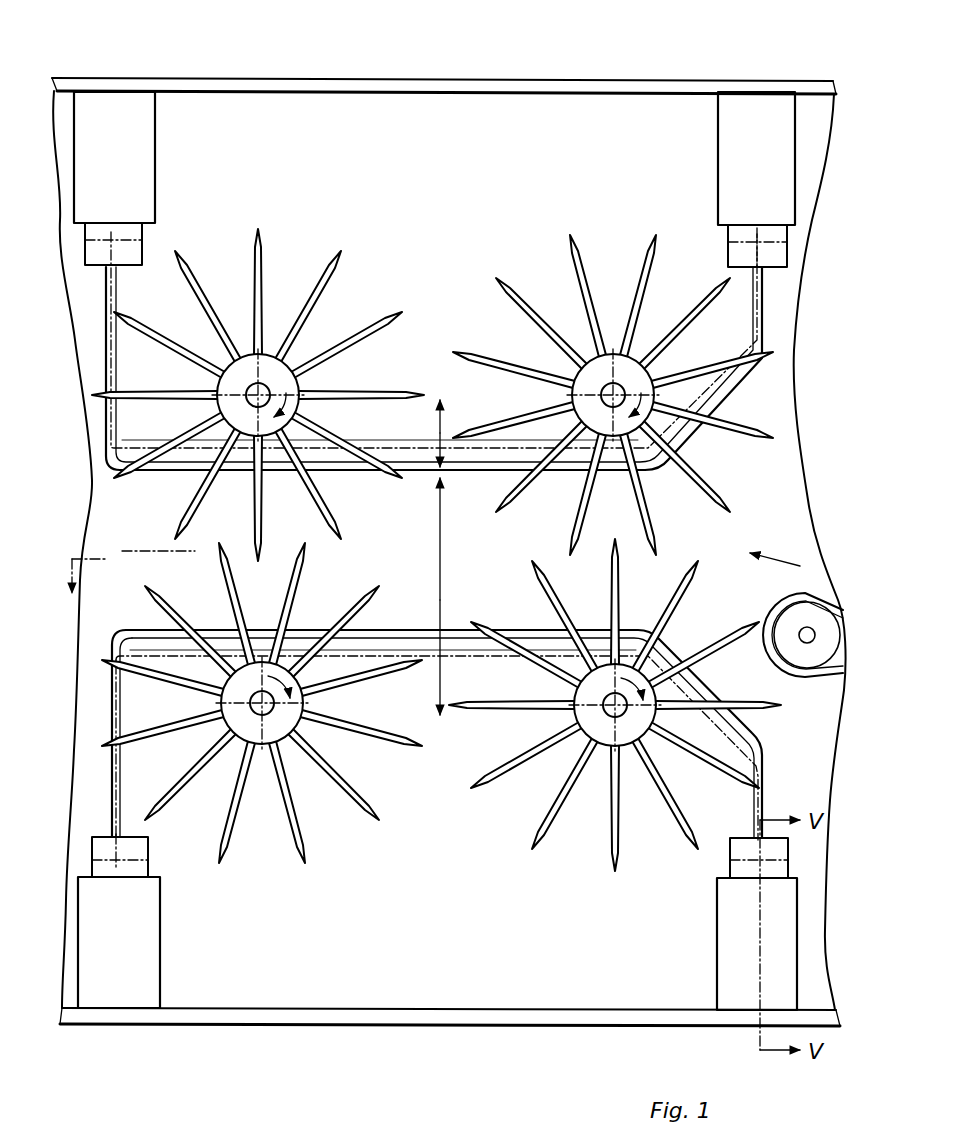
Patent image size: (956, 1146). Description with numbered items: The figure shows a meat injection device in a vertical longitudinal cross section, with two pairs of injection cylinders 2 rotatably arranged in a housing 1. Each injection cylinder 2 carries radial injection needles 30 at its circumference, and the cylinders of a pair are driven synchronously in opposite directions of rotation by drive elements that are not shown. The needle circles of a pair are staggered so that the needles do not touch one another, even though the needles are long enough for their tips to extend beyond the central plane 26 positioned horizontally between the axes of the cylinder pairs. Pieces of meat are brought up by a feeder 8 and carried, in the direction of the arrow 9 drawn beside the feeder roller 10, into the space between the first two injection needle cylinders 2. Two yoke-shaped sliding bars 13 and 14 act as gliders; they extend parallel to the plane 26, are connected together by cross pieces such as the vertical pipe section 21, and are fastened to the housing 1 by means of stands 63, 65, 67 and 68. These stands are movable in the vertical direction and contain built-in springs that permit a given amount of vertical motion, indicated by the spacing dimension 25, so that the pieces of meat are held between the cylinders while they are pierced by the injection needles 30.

The housing 1 is at (78, 200).
The injection cylinder 2 is at (628, 368).
The feeder 8 is at (830, 597).
The direction of movement arrow 9 is at (777, 556).
The guide roller 10 is at (816, 597).
The sliding bar 13 is at (737, 382).
The sliding bar 14 is at (762, 745).
The vertical pipe section 21 is at (110, 800).
The spacing dimension 25 is at (460, 527).
The central plane 26 is at (148, 551).
The radial injection needles 30 is at (290, 222).
The stand 63 is at (142, 934).
The stand 65 is at (772, 920).
The stand 67 is at (128, 128).
The stand 68 is at (752, 133).